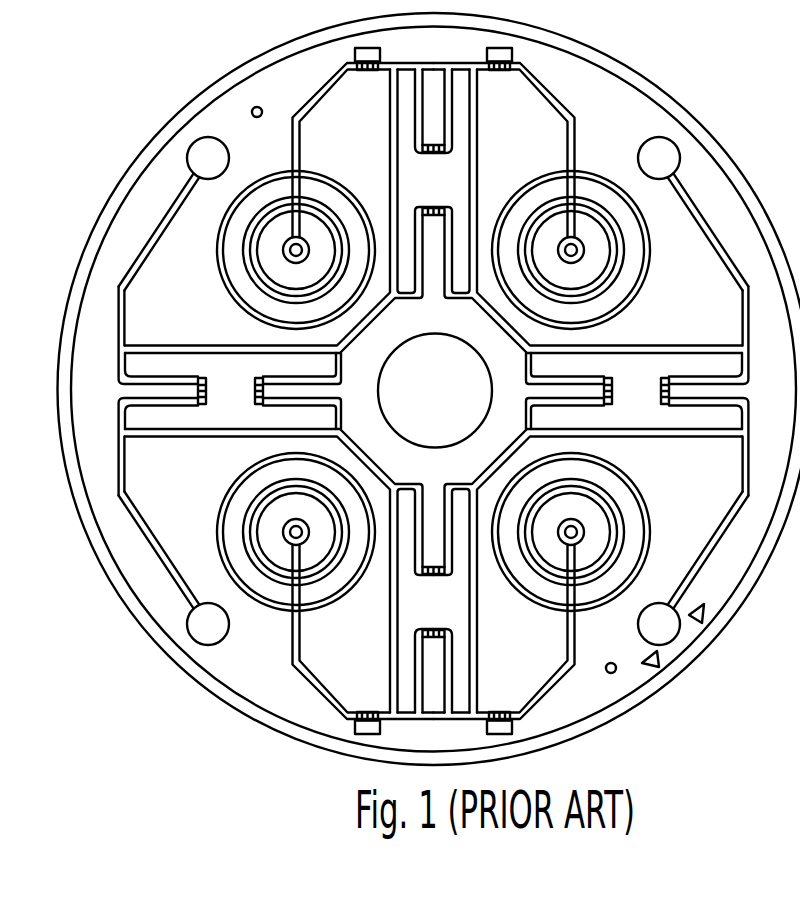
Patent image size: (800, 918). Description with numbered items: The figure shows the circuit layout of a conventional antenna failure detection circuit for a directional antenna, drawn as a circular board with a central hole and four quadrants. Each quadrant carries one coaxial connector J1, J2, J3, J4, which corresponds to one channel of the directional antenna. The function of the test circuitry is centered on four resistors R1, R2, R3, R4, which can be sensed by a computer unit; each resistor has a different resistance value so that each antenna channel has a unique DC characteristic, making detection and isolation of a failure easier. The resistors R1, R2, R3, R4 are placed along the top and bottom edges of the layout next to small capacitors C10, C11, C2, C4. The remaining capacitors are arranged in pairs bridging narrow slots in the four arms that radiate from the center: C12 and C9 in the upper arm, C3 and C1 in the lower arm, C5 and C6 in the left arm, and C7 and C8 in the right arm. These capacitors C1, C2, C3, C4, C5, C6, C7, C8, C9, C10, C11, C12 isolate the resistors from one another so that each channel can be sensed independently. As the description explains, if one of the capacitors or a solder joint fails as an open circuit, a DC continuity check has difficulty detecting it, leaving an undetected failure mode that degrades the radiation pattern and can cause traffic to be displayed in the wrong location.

The coaxial connector J1 is at (296, 238).
The coaxial connector J2 is at (571, 238).
The coaxial connector J3 is at (571, 545).
The coaxial connector J4 is at (296, 545).
The resistor R1 is at (379, 50).
The resistor R2 is at (484, 50).
The resistor R3 is at (487, 732).
The resistor R4 is at (380, 732).
The capacitor C1 is at (434, 617).
The capacitor C2 is at (368, 699).
The capacitor C3 is at (434, 585).
The capacitor C4 is at (500, 699).
The capacitor C5 is at (212, 388).
The capacitor C6 is at (248, 388).
The capacitor C7 is at (620, 392).
The capacitor C8 is at (655, 392).
The capacitor C9 is at (434, 196).
The capacitor C10 is at (367, 85).
The capacitor C11 is at (501, 85).
The capacitor C12 is at (433, 166).